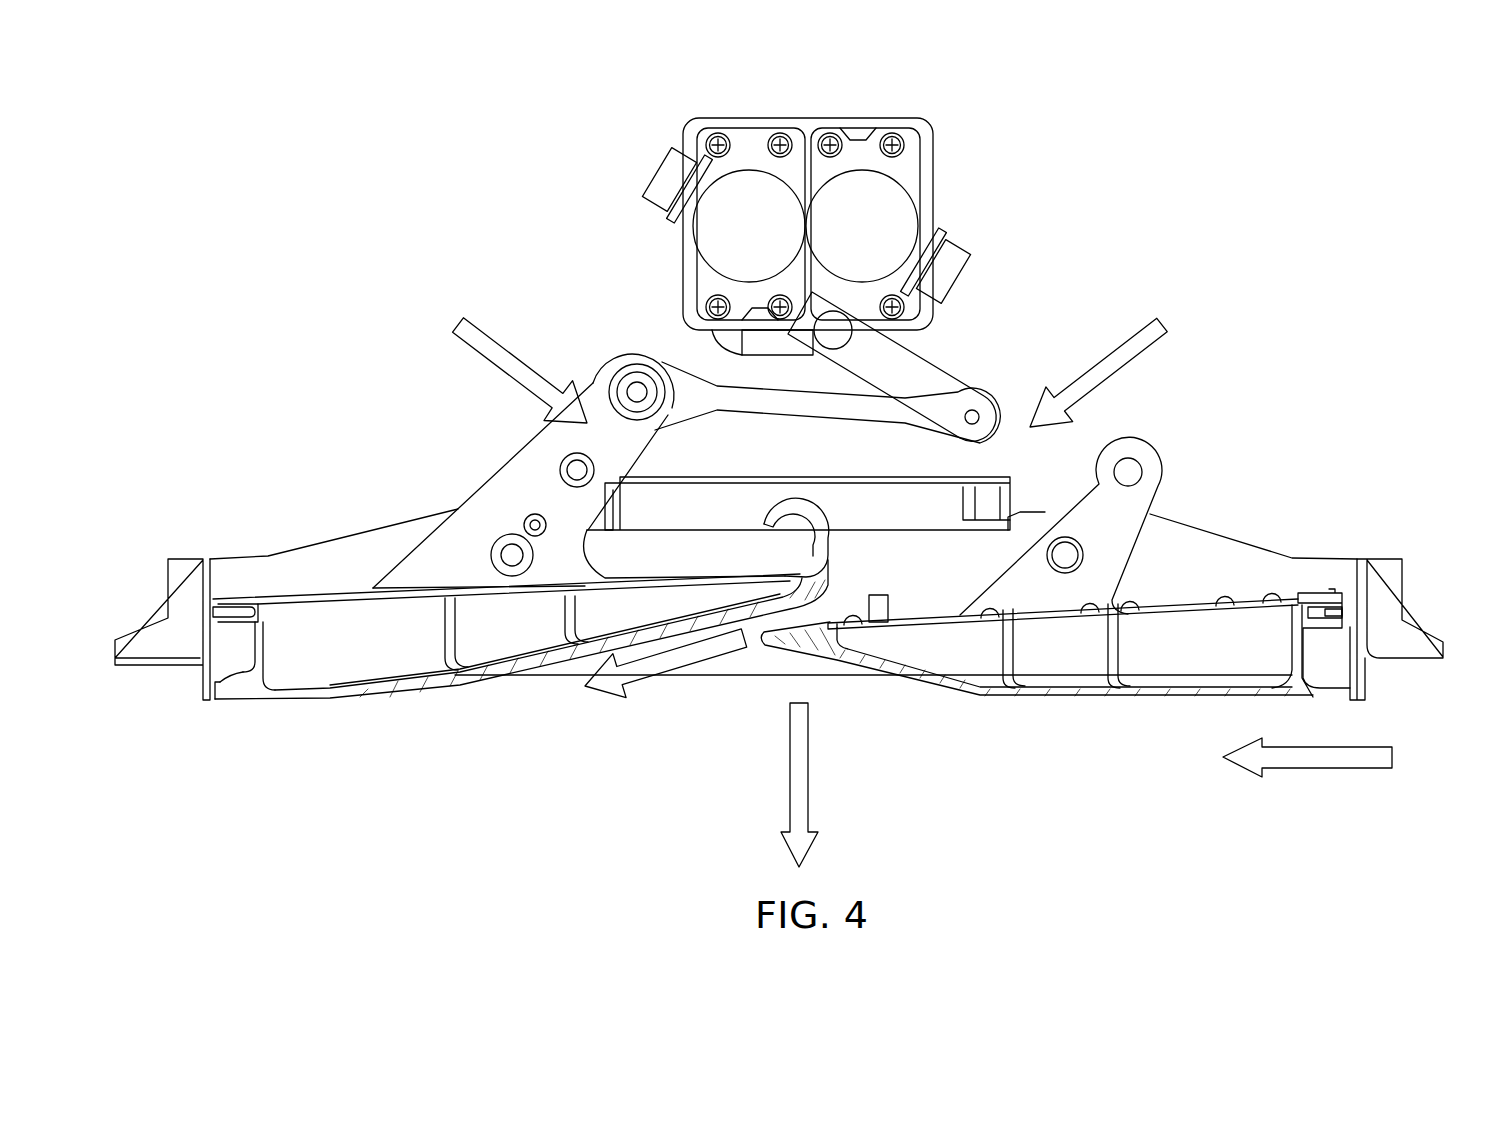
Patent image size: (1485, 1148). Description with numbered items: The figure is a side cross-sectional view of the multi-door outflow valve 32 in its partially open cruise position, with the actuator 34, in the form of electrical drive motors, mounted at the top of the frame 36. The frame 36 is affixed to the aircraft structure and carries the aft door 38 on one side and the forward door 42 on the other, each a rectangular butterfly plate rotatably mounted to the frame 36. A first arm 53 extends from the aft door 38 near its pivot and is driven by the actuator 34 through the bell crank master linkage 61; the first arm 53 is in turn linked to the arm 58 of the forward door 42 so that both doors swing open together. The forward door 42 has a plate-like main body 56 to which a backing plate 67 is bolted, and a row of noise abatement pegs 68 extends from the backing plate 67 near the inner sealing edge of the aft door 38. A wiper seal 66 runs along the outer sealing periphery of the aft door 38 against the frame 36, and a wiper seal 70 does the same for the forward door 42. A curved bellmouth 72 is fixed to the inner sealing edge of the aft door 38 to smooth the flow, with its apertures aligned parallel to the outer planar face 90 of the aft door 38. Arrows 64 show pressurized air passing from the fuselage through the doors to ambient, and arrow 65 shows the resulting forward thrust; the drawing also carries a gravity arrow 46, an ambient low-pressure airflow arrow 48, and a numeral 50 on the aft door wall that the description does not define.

The outflow valve 32 is at (343, 220).
The actuator 34 is at (803, 117).
The frame 36 is at (318, 560).
The aft door 38 is at (333, 669).
The forward door 42 is at (1075, 688).
The gravity direction 46 is at (790, 728).
The ambient airflow 48 is at (1392, 755).
The duct wall 50 is at (487, 652).
The first arm 53 is at (487, 500).
The main body 56 is at (933, 692).
The first arm 58 is at (1152, 468).
The master linkage 61 is at (934, 370).
The arrows 64 is at (457, 322).
The arrow 65 is at (690, 668).
The first wiper seal 66 is at (230, 608).
The backing plate 67 is at (932, 614).
The noise abatement pegs 68 is at (878, 595).
The wiper seal 70 is at (1345, 610).
The bellmouth 72 is at (829, 512).
The outer planar face 90 is at (545, 660).